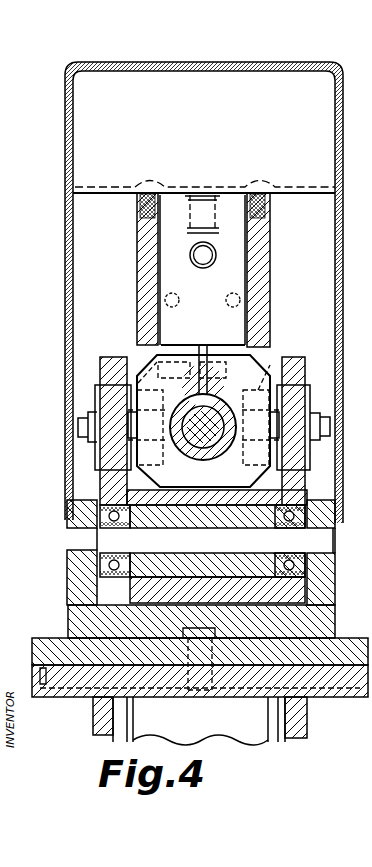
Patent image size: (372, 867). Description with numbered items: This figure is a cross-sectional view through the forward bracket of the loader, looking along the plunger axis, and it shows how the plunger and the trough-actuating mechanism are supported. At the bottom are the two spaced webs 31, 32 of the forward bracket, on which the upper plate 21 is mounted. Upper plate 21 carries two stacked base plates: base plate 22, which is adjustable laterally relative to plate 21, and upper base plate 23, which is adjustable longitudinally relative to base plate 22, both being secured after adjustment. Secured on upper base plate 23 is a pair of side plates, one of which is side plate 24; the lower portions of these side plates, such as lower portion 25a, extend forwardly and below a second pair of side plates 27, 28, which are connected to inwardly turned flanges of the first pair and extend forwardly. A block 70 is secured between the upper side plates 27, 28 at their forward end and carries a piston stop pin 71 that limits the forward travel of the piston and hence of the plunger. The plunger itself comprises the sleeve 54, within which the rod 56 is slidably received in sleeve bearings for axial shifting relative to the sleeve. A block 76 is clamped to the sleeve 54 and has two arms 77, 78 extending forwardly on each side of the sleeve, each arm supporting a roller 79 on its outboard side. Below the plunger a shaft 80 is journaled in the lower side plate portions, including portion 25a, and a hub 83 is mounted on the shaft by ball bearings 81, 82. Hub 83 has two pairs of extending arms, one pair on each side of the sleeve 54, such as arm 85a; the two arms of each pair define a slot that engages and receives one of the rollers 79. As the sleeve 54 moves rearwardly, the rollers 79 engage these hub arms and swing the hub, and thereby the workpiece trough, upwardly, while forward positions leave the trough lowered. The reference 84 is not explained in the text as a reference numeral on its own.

The upper plate 21 is at (58, 697).
The base plate 22 is at (33, 648).
The upper base plate 23 is at (68, 622).
The side plate 24 is at (336, 572).
The lower portion of side plate 25a is at (67, 571).
The side plate 27 is at (272, 266).
The side plate 28 is at (137, 266).
The web 31 is at (308, 728).
The web 32 is at (93, 725).
The sleeve 54 is at (212, 400).
The rod 56 is at (203, 412).
The block 70 is at (214, 338).
The piston stop pin 71 is at (204, 270).
The block 76 is at (210, 481).
The arm 77 is at (273, 362).
The arm 78 is at (138, 362).
The roller 79 is at (97, 380).
The shaft 80 is at (258, 554).
The ball bearing 81 is at (276, 540).
The ball bearing 82 is at (118, 528).
The hub 83 is at (260, 601).
The housing 84 is at (343, 346).
The arm 85a is at (98, 356).